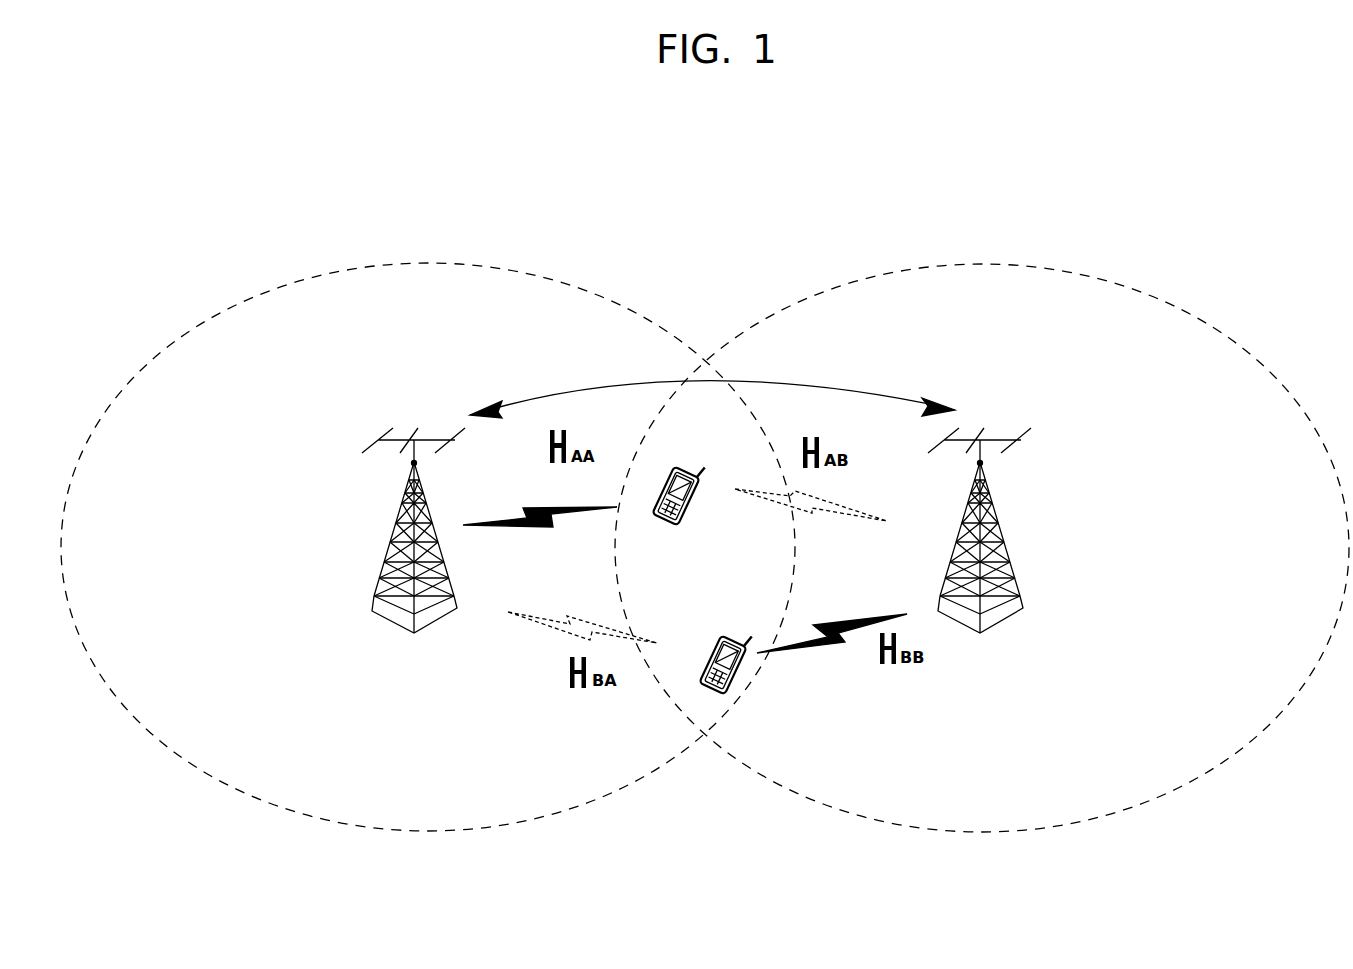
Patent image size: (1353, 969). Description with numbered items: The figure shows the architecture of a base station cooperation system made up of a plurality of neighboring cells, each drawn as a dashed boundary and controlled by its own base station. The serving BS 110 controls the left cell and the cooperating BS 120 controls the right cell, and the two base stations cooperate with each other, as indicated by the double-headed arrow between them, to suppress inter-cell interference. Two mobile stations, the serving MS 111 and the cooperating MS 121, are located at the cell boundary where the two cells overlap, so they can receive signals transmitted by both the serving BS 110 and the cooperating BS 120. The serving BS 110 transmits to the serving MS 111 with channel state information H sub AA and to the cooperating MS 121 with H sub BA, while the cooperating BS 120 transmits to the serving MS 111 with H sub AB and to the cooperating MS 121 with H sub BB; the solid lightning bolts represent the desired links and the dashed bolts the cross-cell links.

The serving BS 110 is at (418, 438).
The cooperating BS 120 is at (984, 438).
The serving MS 111 is at (679, 522).
The cooperating MS 121 is at (734, 684).